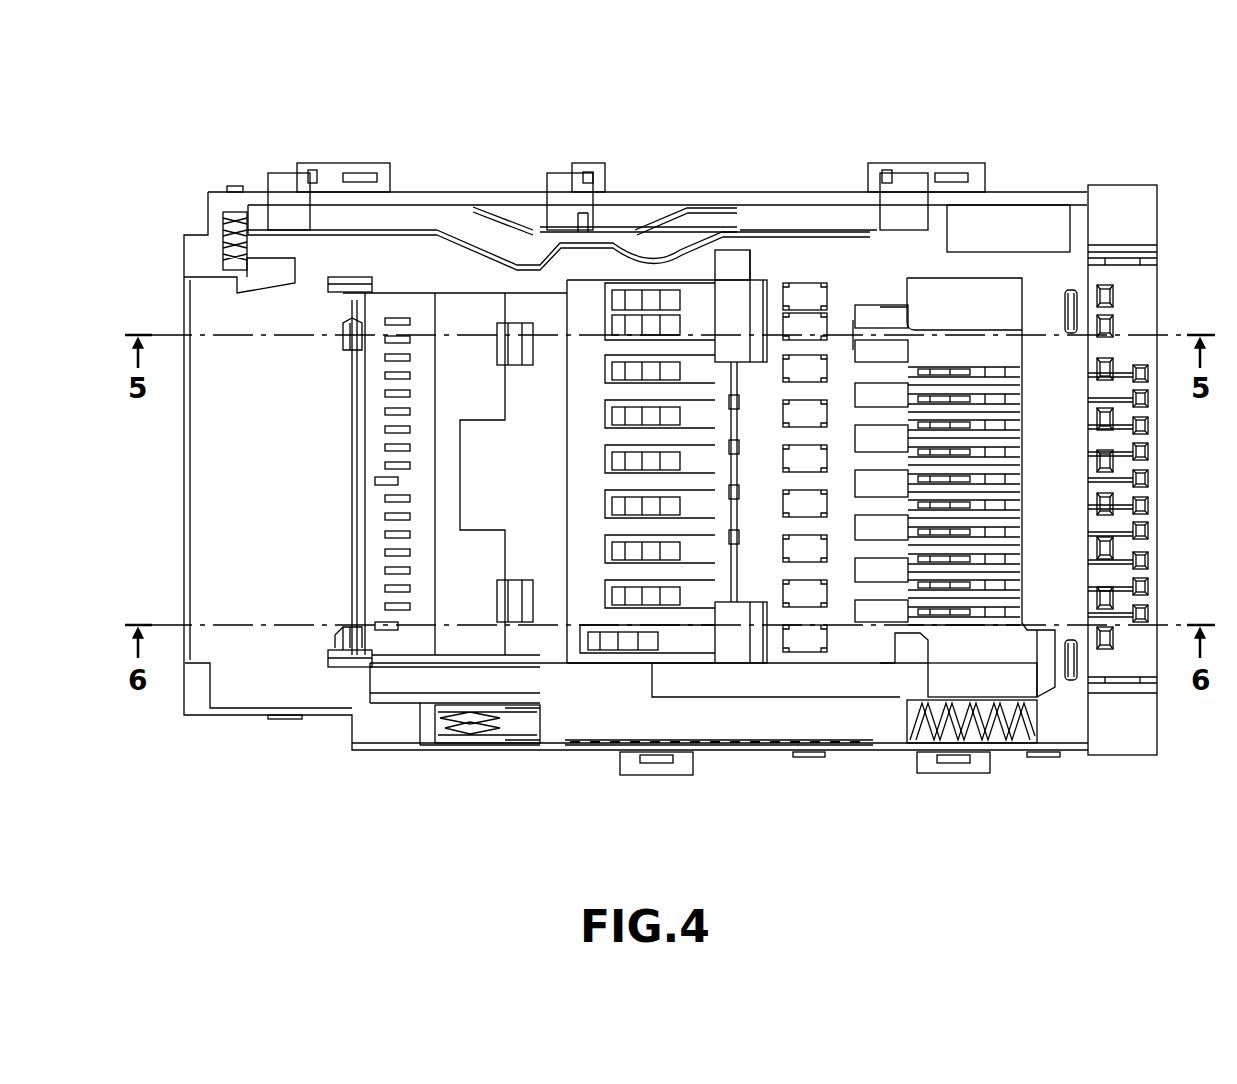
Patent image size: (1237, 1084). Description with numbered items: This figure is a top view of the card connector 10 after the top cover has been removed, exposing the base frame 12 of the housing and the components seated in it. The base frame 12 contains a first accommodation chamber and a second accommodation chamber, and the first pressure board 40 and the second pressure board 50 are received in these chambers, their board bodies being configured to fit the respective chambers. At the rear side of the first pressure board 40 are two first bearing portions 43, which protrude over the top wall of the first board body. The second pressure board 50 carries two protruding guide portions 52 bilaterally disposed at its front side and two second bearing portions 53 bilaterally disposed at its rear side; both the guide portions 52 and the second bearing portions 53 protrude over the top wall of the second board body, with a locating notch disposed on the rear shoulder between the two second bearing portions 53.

The card connector 10 is at (1018, 150).
The base frame 12 is at (768, 753).
The first pressure board 40 is at (700, 310).
The first bearing portions 43 is at (758, 307).
The second pressure board 50 is at (473, 317).
The protruding guide portions 52 is at (340, 323).
The second bearing portions 53 is at (513, 330).